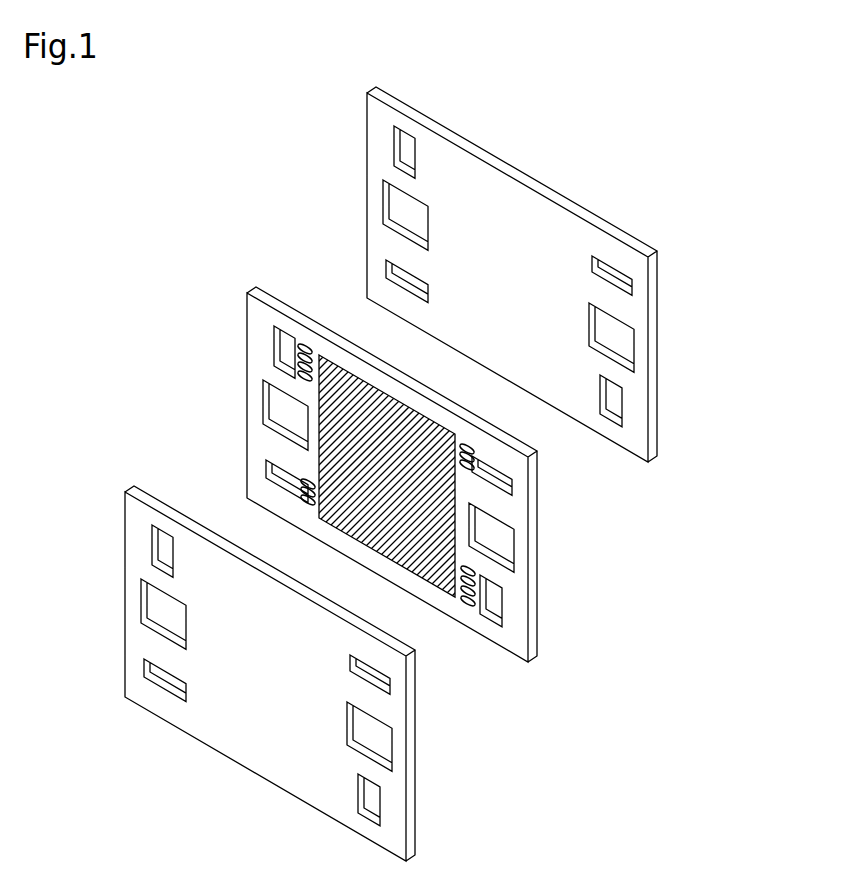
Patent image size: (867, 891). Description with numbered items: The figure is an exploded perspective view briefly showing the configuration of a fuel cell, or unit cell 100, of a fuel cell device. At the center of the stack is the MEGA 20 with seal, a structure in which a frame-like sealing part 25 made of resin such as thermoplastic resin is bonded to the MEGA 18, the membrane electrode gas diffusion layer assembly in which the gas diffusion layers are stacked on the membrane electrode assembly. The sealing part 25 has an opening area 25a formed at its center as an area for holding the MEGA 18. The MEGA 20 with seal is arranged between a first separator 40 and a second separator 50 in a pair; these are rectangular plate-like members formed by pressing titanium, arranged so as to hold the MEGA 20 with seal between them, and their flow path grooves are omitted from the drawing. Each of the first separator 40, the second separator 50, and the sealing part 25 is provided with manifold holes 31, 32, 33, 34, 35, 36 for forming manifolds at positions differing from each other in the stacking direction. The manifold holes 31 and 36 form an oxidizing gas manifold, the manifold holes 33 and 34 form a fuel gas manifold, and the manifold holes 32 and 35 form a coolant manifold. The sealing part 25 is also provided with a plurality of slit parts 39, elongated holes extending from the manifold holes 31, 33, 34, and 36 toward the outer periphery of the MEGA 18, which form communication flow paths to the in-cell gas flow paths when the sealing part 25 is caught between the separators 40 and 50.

The fuel cell (unit cell) 100 is at (741, 205).
The second separator 50 is at (532, 173).
The MEGA with seal 20 is at (244, 290).
The sealing part 25 is at (537, 639).
The opening area 25a is at (328, 360).
The membrane electrode gas diffusion layer assembly (MEGA) 18 is at (362, 528).
The first separator 40 is at (266, 780).
The manifold hole 31 is at (394, 142).
The manifold hole 32 is at (383, 200).
The manifold hole 33 is at (386, 266).
The manifold hole 34 is at (632, 281).
The manifold hole 35 is at (634, 347).
The manifold hole 36 is at (622, 405).
The slit parts 39 is at (302, 346).